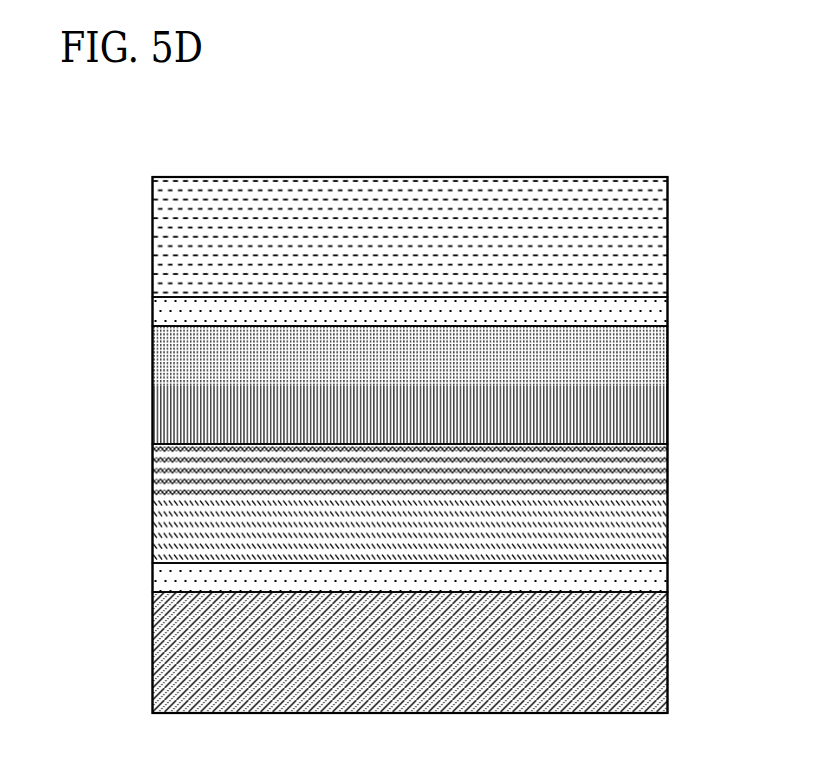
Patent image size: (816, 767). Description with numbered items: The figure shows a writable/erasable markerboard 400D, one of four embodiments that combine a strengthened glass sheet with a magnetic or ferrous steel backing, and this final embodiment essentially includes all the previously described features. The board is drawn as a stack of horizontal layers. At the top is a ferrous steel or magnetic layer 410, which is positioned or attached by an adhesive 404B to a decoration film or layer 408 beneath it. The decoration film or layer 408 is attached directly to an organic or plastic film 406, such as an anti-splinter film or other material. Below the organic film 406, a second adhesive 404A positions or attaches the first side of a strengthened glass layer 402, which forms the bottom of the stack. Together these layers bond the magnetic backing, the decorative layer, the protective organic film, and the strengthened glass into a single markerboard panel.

The writable/erasable markerboard 400D is at (532, 177).
The strengthened glass layer 402 is at (152, 640).
The second adhesive 404A is at (667, 562).
The adhesive 404B is at (667, 305).
The organic film 406 is at (667, 465).
The decoration film 408 is at (152, 413).
The ferrous steel or magnetic layer 410 is at (667, 195).